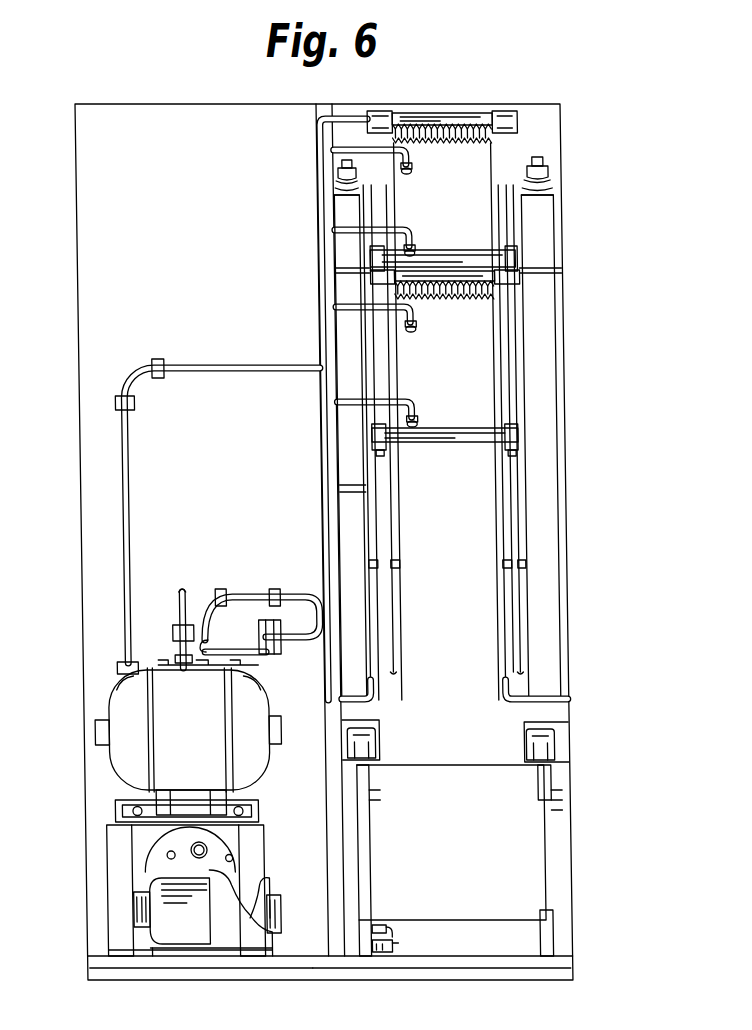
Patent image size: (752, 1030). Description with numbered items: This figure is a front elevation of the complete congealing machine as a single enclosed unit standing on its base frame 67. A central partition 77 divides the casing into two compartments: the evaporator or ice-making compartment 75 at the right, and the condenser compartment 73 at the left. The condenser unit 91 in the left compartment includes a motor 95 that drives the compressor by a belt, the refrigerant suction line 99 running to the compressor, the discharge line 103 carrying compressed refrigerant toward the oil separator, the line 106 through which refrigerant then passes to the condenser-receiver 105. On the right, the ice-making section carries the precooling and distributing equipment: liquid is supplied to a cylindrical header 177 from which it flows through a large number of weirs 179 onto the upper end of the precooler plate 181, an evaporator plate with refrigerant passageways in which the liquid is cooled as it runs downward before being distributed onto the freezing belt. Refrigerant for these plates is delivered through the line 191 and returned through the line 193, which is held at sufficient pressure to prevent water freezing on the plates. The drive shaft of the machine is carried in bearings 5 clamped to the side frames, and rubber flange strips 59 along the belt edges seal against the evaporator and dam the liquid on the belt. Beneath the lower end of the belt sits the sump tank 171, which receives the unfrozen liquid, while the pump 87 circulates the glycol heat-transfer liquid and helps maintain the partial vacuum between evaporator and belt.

The bearings 5 is at (375, 742).
The rubber flange strip 59 is at (388, 194).
The base frame 67 is at (576, 966).
The condenser section or compartment 73 is at (208, 981).
The evaporator or ice-making section or compartment 75 is at (462, 981).
The central partition 77 is at (316, 115).
The pump 87 is at (387, 948).
The condenser unit 91 is at (78, 747).
The motor 95 is at (108, 698).
The refrigerant inlet or suction line 99 is at (120, 462).
The discharge line 103 is at (306, 654).
The condenser-receiver 105 is at (150, 873).
The line 106 is at (179, 590).
The sump tank 171 is at (540, 841).
The cylindrical header 177 is at (503, 112).
The weirs 179 is at (449, 145).
The precooler plate 181 is at (491, 158).
The line 191 is at (335, 237).
The line 193 is at (333, 148).